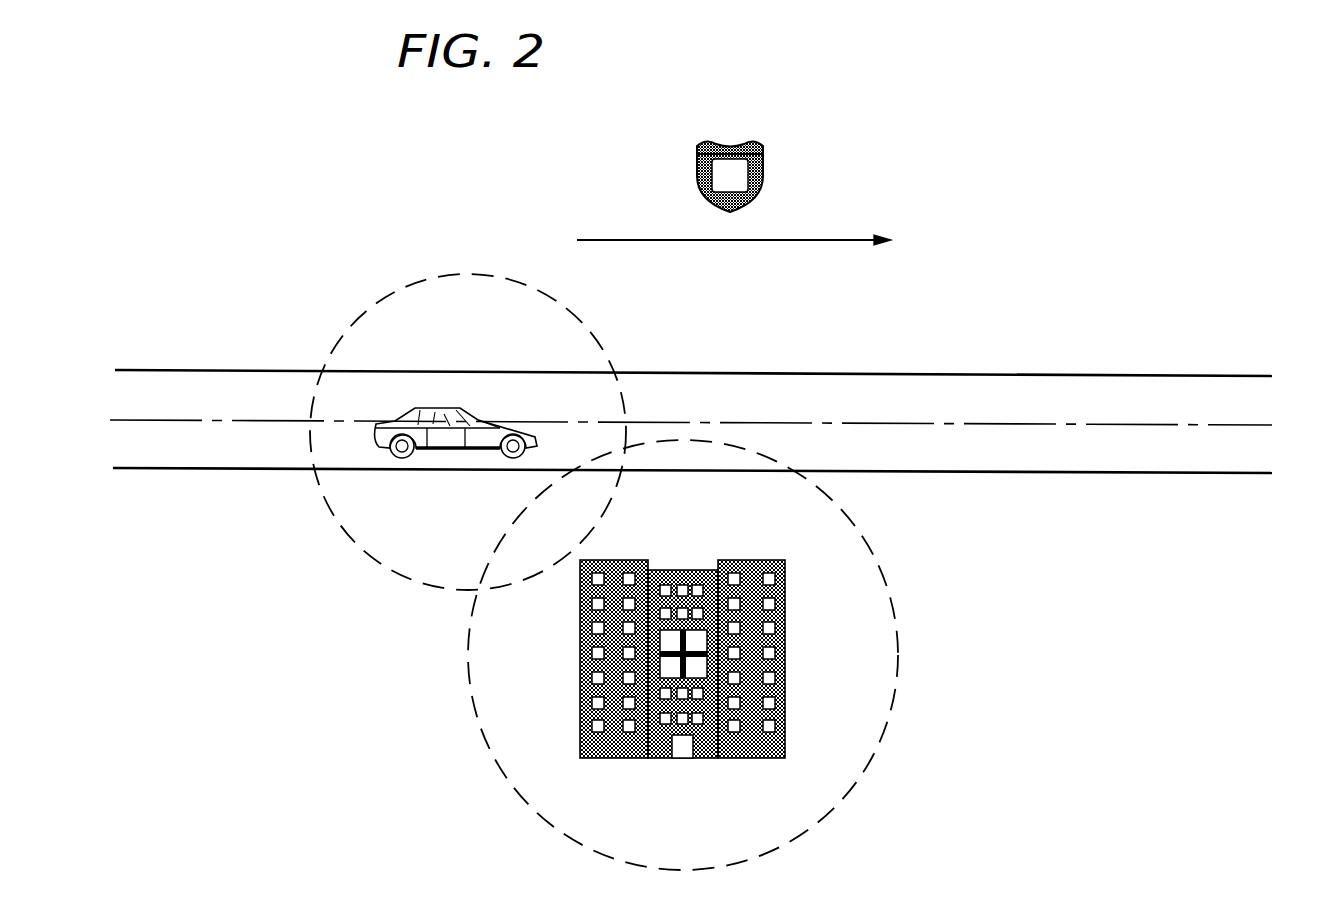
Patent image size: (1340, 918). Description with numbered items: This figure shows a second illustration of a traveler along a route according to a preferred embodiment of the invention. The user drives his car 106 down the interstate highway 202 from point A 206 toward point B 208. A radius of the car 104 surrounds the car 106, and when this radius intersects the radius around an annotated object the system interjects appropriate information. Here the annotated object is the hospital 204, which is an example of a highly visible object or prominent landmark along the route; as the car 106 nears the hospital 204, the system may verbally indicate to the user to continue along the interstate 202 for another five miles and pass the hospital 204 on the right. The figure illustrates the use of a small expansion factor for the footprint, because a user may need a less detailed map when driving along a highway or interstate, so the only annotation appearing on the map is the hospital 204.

The radius of the car 104 is at (362, 553).
The car 106 is at (440, 406).
The Interstate 90 202 is at (744, 142).
The hospital 204 is at (786, 618).
The point A 206 is at (76, 383).
The point B 208 is at (1306, 387).